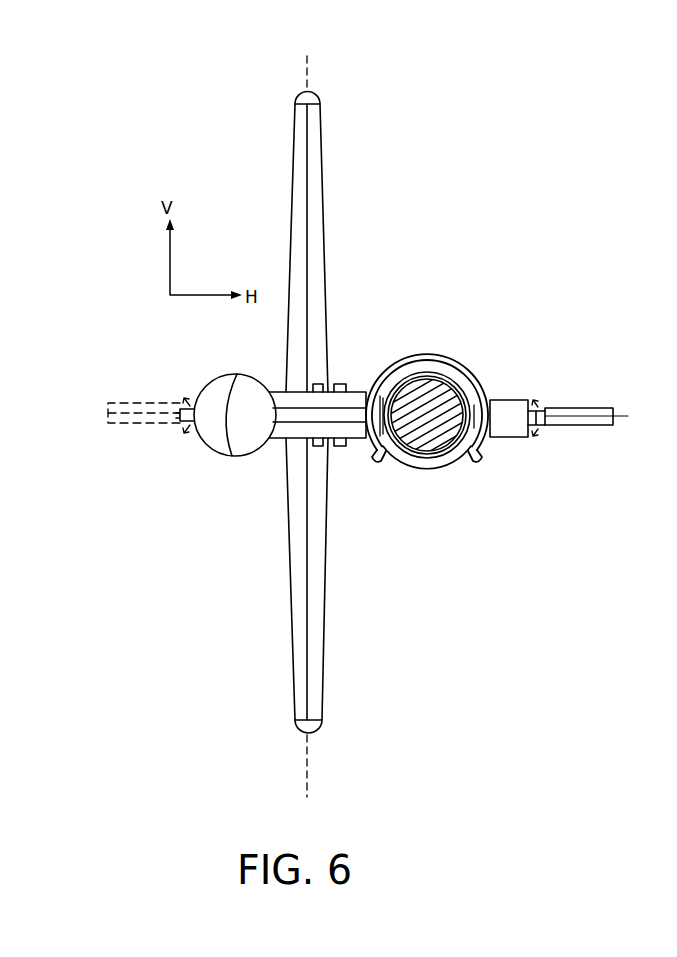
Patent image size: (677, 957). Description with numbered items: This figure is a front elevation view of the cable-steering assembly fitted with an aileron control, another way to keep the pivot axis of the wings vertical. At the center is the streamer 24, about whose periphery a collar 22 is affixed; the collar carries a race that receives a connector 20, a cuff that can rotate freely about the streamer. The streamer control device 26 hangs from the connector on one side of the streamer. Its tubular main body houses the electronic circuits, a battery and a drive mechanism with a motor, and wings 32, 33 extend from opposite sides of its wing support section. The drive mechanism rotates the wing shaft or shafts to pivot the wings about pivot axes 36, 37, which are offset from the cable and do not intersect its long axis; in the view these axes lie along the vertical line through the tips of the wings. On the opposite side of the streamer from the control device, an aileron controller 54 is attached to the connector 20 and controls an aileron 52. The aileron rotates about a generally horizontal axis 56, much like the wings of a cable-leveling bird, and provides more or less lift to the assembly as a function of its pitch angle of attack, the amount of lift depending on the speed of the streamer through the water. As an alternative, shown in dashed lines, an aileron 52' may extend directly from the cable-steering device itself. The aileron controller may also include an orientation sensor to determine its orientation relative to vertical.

The connector 20 is at (410, 352).
The collar 22 is at (435, 465).
The streamer 24 is at (453, 450).
The streamer control device 26 is at (250, 447).
The wing 32 is at (320, 213).
The wing 33 is at (320, 646).
The pivot axis 36 is at (307, 39).
The pivot axis 37 is at (307, 759).
The aileron 52 is at (582, 404).
The aileron 52' is at (144, 403).
The aileron controller 54 is at (509, 408).
The horizontal axis 56 is at (637, 416).